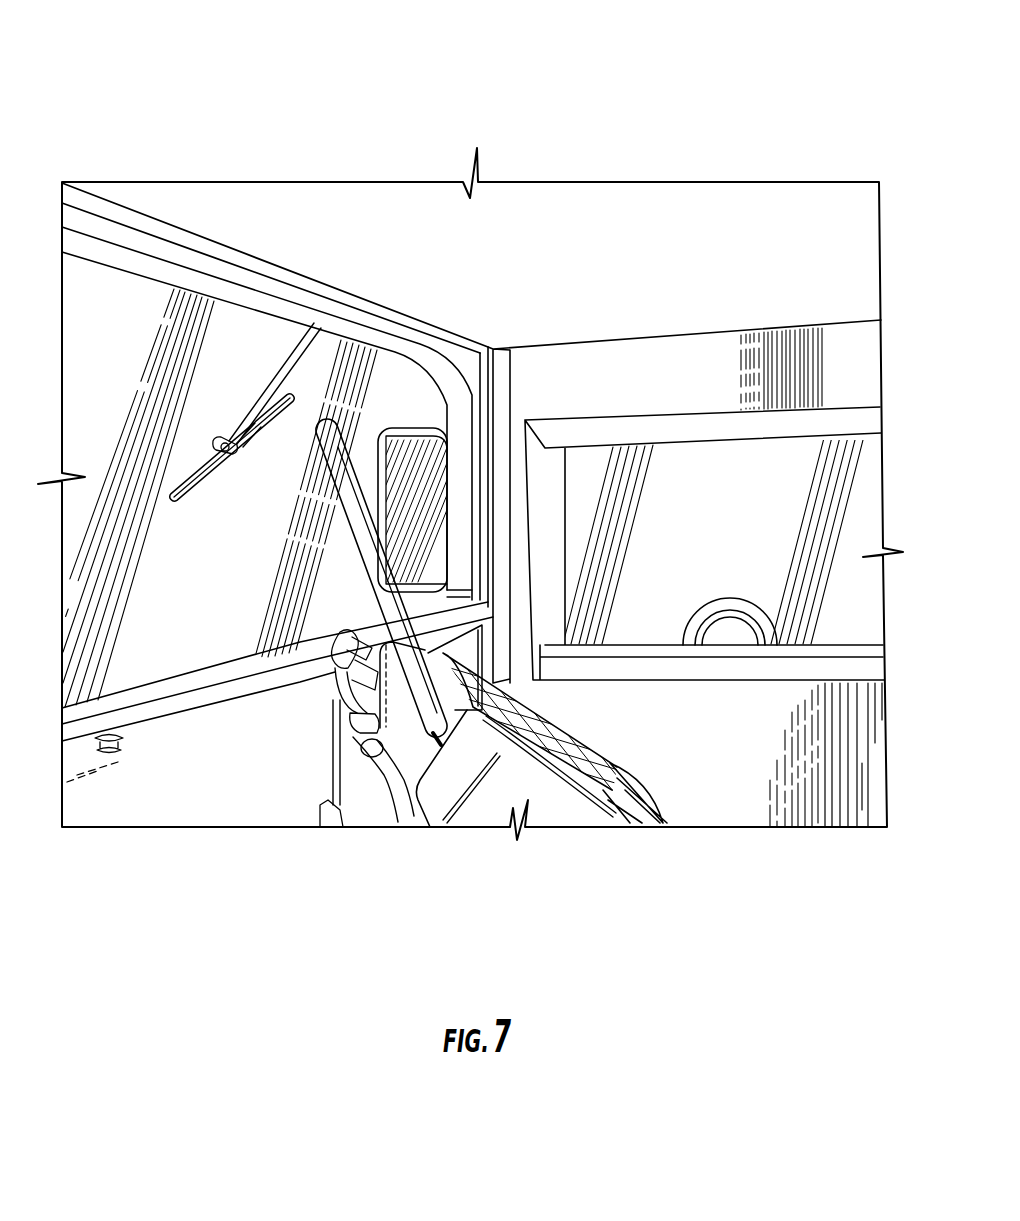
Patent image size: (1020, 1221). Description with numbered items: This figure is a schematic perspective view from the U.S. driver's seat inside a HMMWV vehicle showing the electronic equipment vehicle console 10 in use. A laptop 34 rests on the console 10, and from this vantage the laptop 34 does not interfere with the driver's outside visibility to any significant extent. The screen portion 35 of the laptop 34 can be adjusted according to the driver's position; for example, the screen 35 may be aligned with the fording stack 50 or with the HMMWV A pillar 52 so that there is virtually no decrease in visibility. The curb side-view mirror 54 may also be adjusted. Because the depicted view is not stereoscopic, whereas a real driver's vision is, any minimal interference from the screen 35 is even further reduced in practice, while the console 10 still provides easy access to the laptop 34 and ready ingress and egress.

The electronic equipment vehicle console 10 is at (384, 816).
The laptop 34 is at (517, 840).
The screen portion 35 is at (350, 503).
The fording stack 50 is at (258, 335).
The A pillar 52 is at (502, 447).
The curb side-view mirror 54 is at (412, 466).